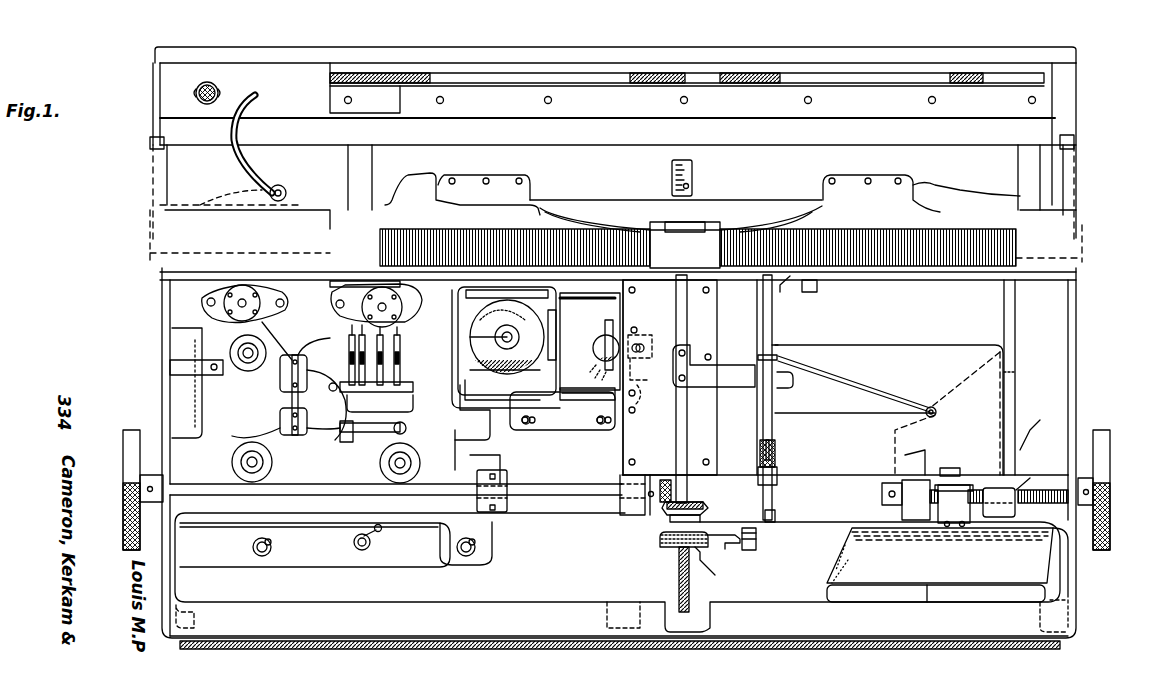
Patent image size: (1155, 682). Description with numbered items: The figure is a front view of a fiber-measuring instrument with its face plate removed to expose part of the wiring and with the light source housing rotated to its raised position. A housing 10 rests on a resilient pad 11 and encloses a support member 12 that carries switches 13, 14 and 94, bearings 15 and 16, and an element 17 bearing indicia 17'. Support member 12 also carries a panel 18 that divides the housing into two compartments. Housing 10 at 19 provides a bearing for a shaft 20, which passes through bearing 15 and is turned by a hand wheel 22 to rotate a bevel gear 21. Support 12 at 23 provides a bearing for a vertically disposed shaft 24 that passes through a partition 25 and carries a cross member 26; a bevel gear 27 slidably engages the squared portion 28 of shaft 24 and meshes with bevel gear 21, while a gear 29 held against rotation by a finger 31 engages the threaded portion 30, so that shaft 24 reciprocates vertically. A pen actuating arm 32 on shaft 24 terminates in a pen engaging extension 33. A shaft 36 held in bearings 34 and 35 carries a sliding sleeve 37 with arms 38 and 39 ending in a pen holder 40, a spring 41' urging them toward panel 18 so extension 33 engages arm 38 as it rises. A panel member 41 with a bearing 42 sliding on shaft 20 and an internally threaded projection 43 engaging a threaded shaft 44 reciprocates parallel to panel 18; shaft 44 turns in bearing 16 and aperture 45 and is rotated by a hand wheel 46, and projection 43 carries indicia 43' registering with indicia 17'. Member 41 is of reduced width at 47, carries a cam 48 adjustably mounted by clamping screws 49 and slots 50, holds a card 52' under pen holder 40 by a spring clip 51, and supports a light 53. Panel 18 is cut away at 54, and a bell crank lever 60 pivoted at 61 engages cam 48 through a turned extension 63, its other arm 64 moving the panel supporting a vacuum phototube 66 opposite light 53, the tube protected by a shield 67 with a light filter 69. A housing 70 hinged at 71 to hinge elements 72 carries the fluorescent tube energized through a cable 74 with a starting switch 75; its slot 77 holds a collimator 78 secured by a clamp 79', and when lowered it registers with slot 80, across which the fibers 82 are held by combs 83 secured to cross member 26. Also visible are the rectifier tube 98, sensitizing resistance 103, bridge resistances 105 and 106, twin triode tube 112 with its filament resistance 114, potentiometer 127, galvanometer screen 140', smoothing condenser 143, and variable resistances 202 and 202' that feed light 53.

The housing 10 is at (1070, 395).
The resilient pad 11 is at (1048, 649).
The support member 12 is at (1053, 530).
The switch 13 is at (272, 545).
The switch 14 is at (472, 552).
The bearing 15 is at (628, 512).
The bearing 16 is at (916, 512).
The element 17 is at (954, 524).
The indicia 17' is at (968, 453).
The panel 18 is at (1055, 352).
The bearing 19 is at (182, 500).
The shaft 20 is at (395, 495).
The bevel gear 21 is at (650, 502).
The hand wheel 22 is at (124, 475).
The bearing 23 is at (715, 572).
The vertically disposed shaft 24 is at (685, 470).
The partition 25 is at (662, 280).
The cross member 26 is at (622, 203).
The bevel gear 27 is at (700, 514).
The squared portion 28 is at (682, 498).
The gear 29 is at (702, 547).
The threaded portion 30 is at (679, 590).
The finger 31 is at (757, 400).
The pen actuating arm 32 is at (712, 375).
The pen engaging extension 33 is at (793, 380).
The bearing 34 is at (775, 522).
The bearing 35 is at (786, 286).
The shaft 36 is at (774, 320).
The sleeve 37 is at (765, 398).
The arm 38 is at (842, 370).
The arm 39 is at (833, 413).
The pen holder 40 is at (937, 408).
The panel member 41 is at (739, 382).
The spring 41' is at (793, 339).
The bearing 42 is at (510, 498).
The internally threaded projection 43 is at (998, 527).
The indicia 43' is at (1040, 436).
The threaded shaft 44 is at (1040, 488).
The aperture 45 is at (1045, 470).
The hand wheel 46 is at (1110, 542).
The reduced width portion 47 is at (480, 410).
The cam 48 is at (560, 430).
The clamping screws 49 is at (520, 425).
The slots 50 is at (530, 416).
The spring clip 51 is at (912, 458).
The card 52' is at (1026, 388).
The light 53 is at (606, 336).
The cut away 54 is at (620, 305).
The bell crank lever 60 is at (622, 395).
The pivot 61 is at (640, 400).
The turned extension 63 is at (565, 392).
The arm 64 is at (653, 372).
The vacuum phototube 66 is at (548, 360).
The shield 67 is at (465, 385).
The light filter 69 is at (548, 325).
The housing 70 is at (985, 58).
The hinge 71 is at (150, 141).
The hinge elements 72 is at (158, 172).
The cable 74 is at (242, 163).
The starting switch 75 is at (212, 86).
The slot 77 is at (330, 73).
The collimator 78 is at (872, 82).
The clamp 79' is at (687, 127).
The slot 80 is at (380, 237).
The fibers 82 is at (452, 270).
The combs 83 is at (520, 195).
The switch 94 is at (365, 552).
The rectifier tube 98 is at (208, 298).
The sensitizing resistance 103 is at (345, 342).
The resistance 105 is at (280, 372).
The resistance 106 is at (280, 418).
The twin triode tube 112 is at (345, 320).
The resistance 114 is at (340, 288).
The potentiometer 127 is at (380, 468).
The screen 140' is at (1090, 612).
The condenser 143 is at (178, 346).
The variable resistance 202 is at (236, 370).
The variable resistance 202' is at (281, 462).